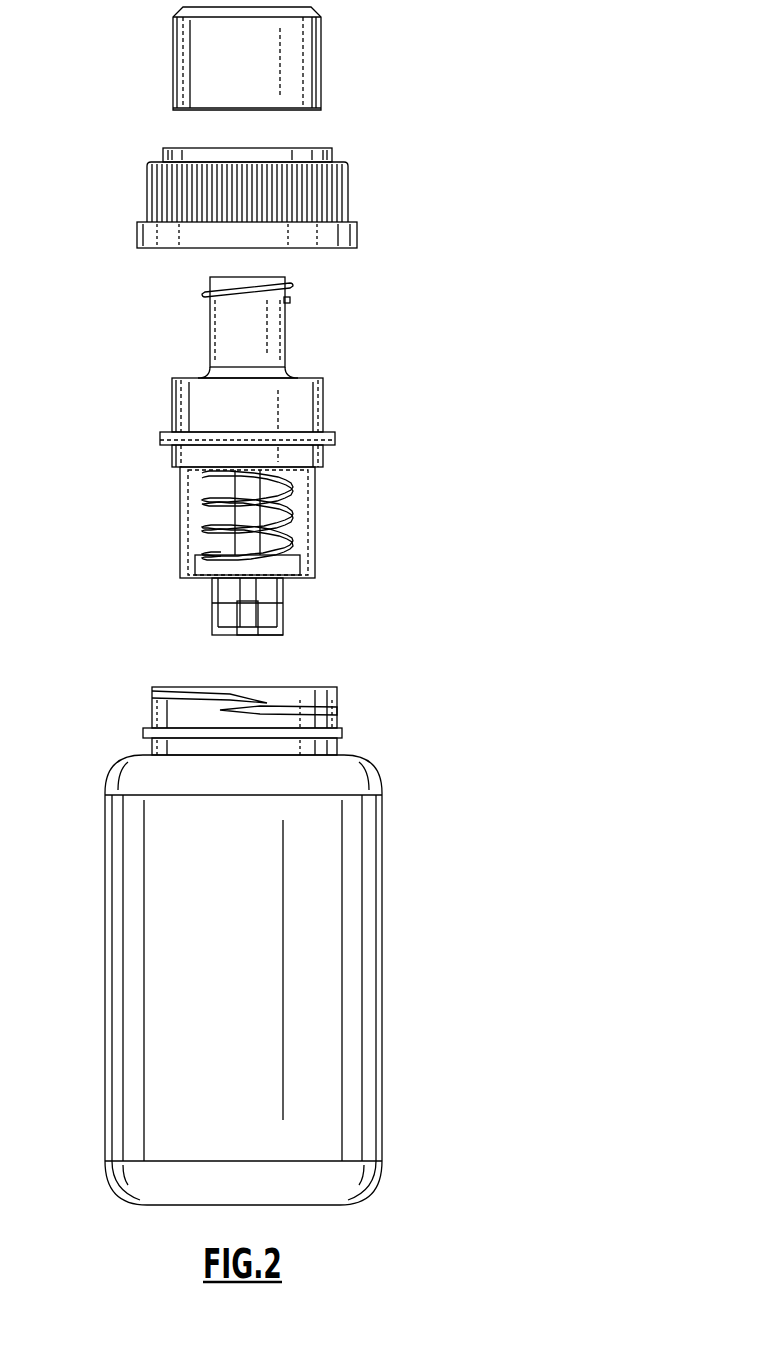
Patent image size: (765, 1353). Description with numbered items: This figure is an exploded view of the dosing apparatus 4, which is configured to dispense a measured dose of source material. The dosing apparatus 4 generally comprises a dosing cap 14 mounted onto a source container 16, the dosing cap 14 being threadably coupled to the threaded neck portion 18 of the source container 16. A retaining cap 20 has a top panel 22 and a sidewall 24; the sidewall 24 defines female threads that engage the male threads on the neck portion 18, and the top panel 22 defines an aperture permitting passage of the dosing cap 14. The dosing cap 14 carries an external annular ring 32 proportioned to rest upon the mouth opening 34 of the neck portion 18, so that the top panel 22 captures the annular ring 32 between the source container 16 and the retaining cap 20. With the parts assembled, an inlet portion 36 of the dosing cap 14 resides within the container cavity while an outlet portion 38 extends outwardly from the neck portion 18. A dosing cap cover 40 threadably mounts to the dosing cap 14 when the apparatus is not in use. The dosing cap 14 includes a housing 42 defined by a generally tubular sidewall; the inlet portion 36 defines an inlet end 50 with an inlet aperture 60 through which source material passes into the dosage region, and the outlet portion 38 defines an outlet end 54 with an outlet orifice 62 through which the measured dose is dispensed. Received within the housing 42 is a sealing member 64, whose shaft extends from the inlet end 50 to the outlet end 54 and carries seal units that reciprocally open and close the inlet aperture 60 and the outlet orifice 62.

The dosing apparatus 4 is at (489, 191).
The dosing cap 14 is at (171, 391).
The source container 16 is at (278, 925).
The neck portion 18 is at (264, 687).
The retaining cap 20 is at (255, 186).
The top panel 22 is at (330, 149).
The sidewall 24 is at (147, 197).
The external annular ring 32 is at (336, 438).
The mouth opening 34 is at (163, 685).
The inlet portion 36 is at (318, 553).
The outlet portion 38 is at (324, 398).
The dosing cap cover 40 is at (322, 58).
The housing 42 is at (171, 470).
The inlet end 50 is at (284, 614).
The outlet end 54 is at (275, 314).
The inlet aperture 60 is at (270, 636).
The outlet orifice 62 is at (278, 279).
The sealing member 64 is at (252, 512).